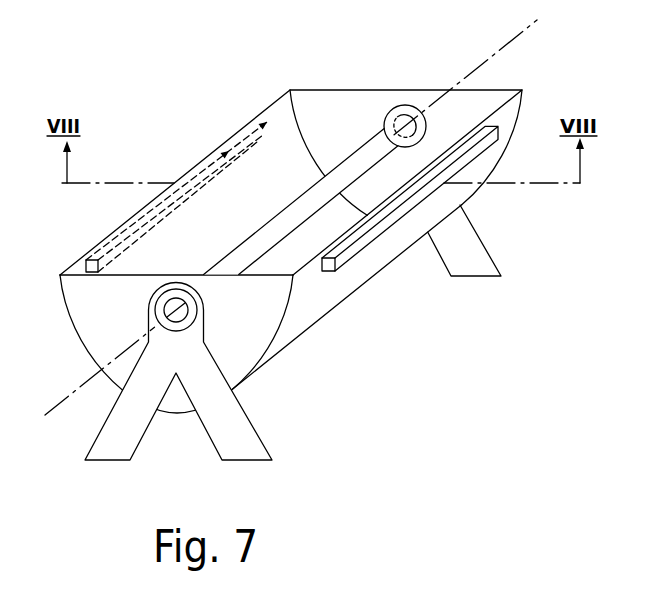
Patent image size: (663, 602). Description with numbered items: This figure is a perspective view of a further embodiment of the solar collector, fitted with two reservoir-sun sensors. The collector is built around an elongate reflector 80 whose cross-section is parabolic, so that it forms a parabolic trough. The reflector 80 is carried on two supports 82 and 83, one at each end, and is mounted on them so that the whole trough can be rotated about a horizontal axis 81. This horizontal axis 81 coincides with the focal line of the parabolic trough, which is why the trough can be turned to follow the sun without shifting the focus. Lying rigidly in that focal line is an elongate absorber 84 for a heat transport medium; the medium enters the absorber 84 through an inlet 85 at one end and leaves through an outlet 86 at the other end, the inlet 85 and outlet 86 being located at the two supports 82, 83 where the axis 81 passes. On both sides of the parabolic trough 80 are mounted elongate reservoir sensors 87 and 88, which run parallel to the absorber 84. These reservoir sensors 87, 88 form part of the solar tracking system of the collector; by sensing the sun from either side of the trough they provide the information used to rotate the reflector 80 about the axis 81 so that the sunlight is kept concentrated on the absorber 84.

The elongate reflector 80 is at (298, 318).
The horizontal axis 81 is at (67, 397).
The support 82 is at (245, 438).
The support 83 is at (472, 253).
The elongate absorber 84 is at (377, 153).
The inlet 85 is at (174, 306).
The outlet 86 is at (407, 121).
The reservoir sensor 87 is at (220, 156).
The reservoir sensor 88 is at (367, 238).